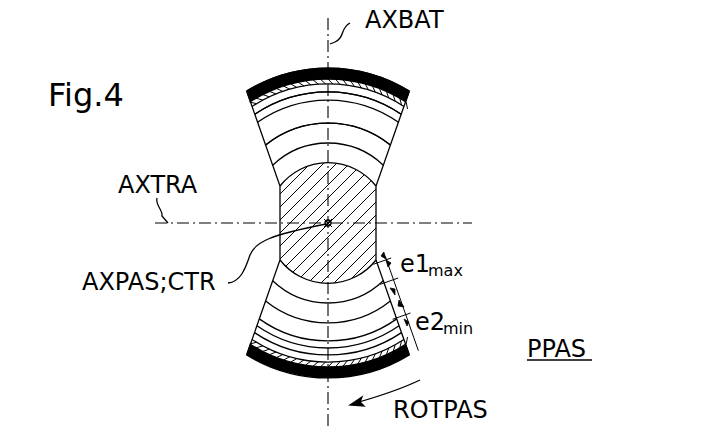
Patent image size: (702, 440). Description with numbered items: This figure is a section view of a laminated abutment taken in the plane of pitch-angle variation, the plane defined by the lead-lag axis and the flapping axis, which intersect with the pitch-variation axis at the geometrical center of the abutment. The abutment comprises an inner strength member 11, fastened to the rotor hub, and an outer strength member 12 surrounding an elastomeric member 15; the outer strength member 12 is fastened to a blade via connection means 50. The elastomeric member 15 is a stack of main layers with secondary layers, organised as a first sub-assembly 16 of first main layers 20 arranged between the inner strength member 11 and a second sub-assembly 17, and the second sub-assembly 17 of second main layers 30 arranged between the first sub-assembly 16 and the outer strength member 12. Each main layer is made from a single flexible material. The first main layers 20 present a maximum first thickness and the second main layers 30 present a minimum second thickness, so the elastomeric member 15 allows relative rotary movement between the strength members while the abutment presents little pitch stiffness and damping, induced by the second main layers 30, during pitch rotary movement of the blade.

The inner strength member 11 is at (362, 214).
The outer strength member 12 is at (404, 104).
The elastomeric member 15 is at (477, 287).
The first sub-assembly 16 is at (271, 161).
The second sub-assembly 17 is at (258, 127).
The first main layer 20 is at (388, 150).
The second main layer 30 is at (405, 119).
The connection means 50 is at (282, 73).